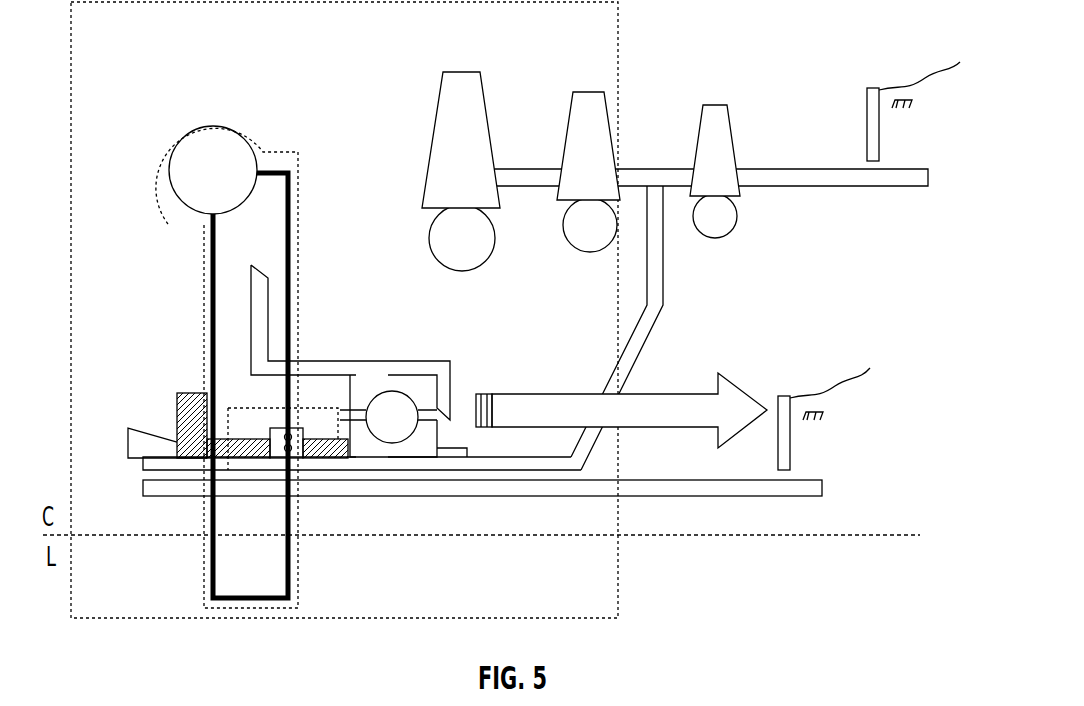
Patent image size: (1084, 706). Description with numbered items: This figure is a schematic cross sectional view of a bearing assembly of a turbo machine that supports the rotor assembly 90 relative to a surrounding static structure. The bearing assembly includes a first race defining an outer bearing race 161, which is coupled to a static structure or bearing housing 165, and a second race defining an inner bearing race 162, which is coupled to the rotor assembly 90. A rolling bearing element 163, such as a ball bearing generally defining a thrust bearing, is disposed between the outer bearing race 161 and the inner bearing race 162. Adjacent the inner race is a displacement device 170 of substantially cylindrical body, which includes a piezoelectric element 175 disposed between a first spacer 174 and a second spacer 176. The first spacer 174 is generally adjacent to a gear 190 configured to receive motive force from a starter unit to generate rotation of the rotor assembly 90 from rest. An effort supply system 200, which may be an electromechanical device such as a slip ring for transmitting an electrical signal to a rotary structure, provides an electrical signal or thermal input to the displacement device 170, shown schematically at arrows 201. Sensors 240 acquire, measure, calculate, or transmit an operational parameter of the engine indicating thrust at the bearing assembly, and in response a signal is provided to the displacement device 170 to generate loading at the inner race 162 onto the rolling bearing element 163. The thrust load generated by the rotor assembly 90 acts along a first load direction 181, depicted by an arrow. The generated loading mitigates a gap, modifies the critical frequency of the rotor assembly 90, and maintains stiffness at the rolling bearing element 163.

The rotor assembly 90 is at (527, 95).
The outer bearing race 161 is at (385, 389).
The inner bearing race 162 is at (385, 467).
The rolling bearing element 163 is at (406, 428).
The bearing housing 165 is at (359, 367).
The displacement device 170 is at (290, 466).
The first spacer 174 is at (235, 425).
The piezoelectric element 175 is at (272, 428).
The second spacer 176 is at (330, 430).
The first load direction 181 is at (586, 394).
The gear 190 is at (163, 418).
The effort supply system 200 is at (178, 133).
The arrows 201 is at (285, 262).
The sensors 240 is at (867, 110).